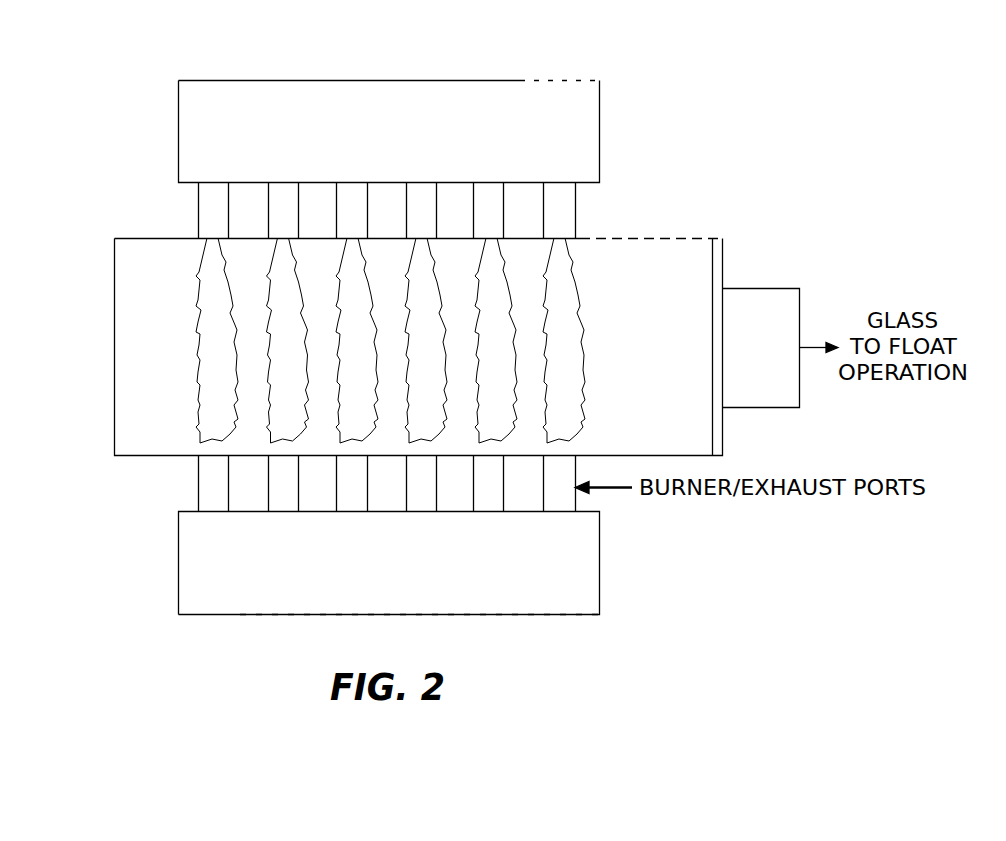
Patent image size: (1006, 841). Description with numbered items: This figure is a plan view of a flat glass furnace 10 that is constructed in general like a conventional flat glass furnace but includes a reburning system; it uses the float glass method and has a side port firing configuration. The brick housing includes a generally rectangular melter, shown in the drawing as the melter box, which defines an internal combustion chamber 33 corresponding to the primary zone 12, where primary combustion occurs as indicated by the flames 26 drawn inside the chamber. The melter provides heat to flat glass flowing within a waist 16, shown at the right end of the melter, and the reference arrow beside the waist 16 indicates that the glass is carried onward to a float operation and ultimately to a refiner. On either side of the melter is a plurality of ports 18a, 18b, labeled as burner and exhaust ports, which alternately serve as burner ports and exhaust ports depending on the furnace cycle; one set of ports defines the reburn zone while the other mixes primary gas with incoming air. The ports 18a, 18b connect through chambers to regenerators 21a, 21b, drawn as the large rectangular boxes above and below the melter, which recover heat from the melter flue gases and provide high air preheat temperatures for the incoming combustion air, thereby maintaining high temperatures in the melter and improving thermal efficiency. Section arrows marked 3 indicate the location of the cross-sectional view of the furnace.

The flat glass furnace 10 is at (722, 93).
The primary zone 12 is at (671, 238).
The waist 16 is at (762, 288).
The ports 18a is at (197, 207).
The ports 18b is at (197, 481).
The regenerator 21a is at (387, 80).
The regenerator 21b is at (538, 614).
The flames 26 is at (578, 312).
The internal combustion chamber 33 is at (660, 393).
The section line of FIG. 3 is at (224, 32).